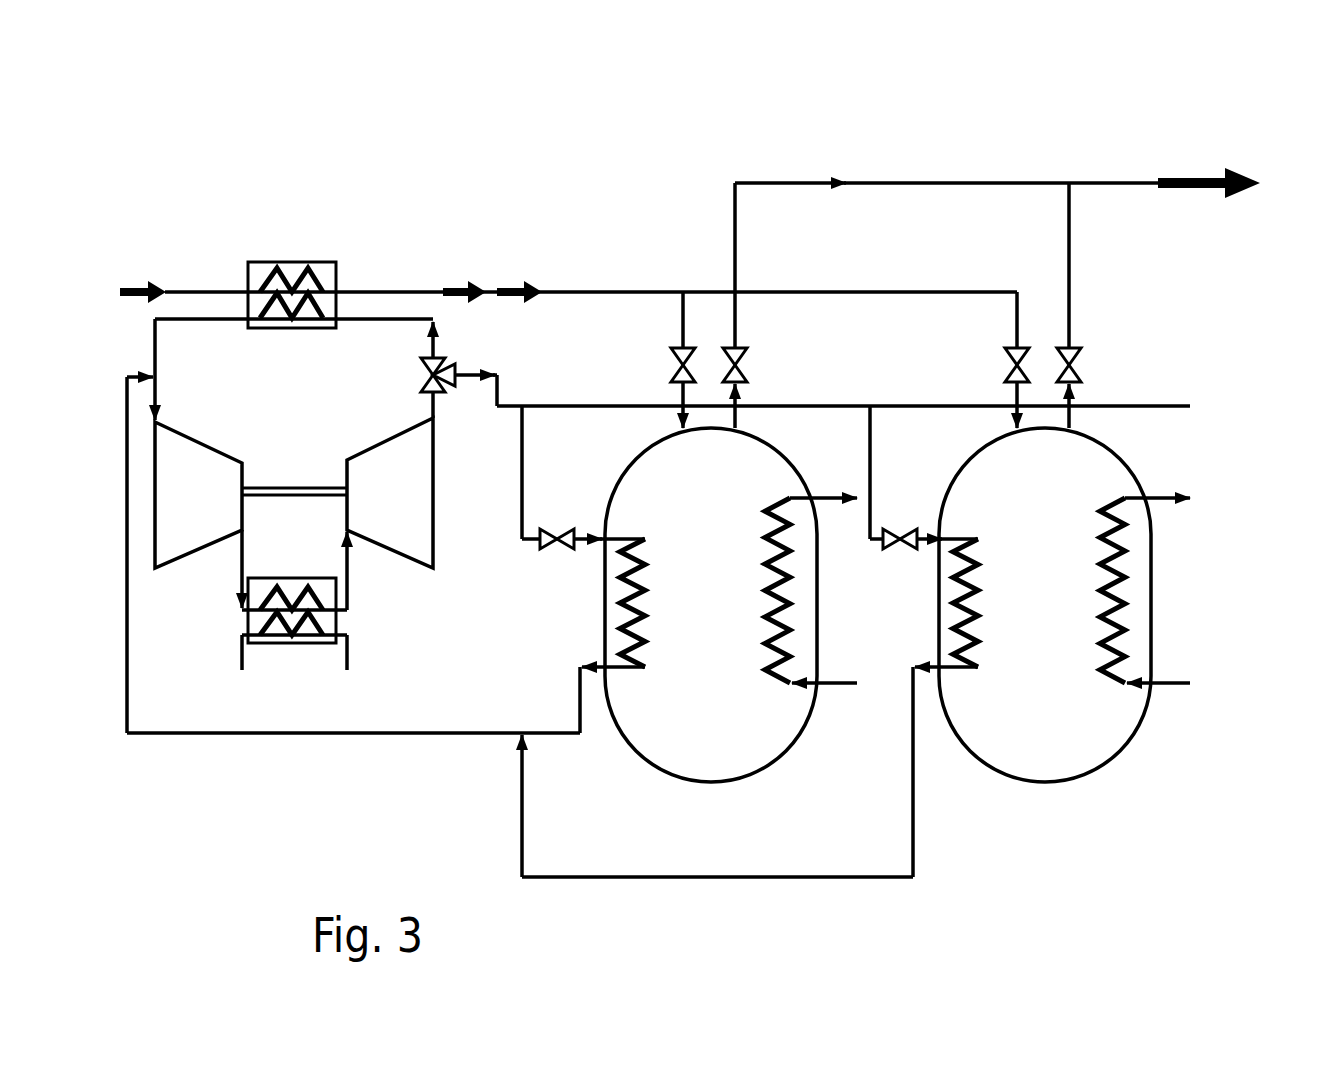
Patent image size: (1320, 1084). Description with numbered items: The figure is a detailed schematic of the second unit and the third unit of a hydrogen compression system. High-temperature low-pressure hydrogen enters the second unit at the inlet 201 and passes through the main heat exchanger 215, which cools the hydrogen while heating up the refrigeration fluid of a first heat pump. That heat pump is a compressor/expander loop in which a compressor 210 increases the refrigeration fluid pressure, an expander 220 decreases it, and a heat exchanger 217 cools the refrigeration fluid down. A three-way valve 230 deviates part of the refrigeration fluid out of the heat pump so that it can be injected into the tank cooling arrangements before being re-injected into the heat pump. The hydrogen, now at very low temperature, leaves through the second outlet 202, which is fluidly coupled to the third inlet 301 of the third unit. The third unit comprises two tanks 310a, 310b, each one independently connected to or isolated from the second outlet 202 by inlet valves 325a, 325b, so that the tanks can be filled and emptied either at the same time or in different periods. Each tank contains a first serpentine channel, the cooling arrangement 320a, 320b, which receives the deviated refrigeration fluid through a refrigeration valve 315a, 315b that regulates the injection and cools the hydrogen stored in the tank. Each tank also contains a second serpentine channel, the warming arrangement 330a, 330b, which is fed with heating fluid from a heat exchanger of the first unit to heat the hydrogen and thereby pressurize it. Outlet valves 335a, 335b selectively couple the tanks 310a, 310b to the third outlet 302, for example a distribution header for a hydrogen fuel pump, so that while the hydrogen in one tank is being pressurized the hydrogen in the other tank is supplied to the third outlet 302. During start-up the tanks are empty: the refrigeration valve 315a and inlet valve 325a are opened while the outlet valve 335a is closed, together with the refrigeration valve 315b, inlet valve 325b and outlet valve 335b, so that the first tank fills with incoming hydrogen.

The inlet 201 is at (160, 290).
The second outlet 202 is at (453, 290).
The third inlet 301 is at (533, 290).
The third outlet 302 is at (1200, 180).
The main heat exchanger 215 is at (320, 262).
The heat exchanger 217 is at (247, 621).
The compressor 210 is at (251, 495).
The expander 220 is at (390, 493).
The three-way valve 230 is at (424, 374).
The tank 310a is at (782, 735).
The tank 310b is at (1110, 732).
The refrigeration valve 315a is at (543, 552).
The refrigeration valve 315b is at (893, 552).
The cooling arrangement 320a is at (645, 538).
The cooling arrangement 320b is at (975, 538).
The inlet valve 325a is at (672, 378).
The inlet valve 325b is at (1005, 378).
The warming arrangement 330a is at (770, 640).
The warming arrangement 330b is at (1118, 628).
The outlet valve 335a is at (748, 377).
The outlet valve 335b is at (1080, 377).